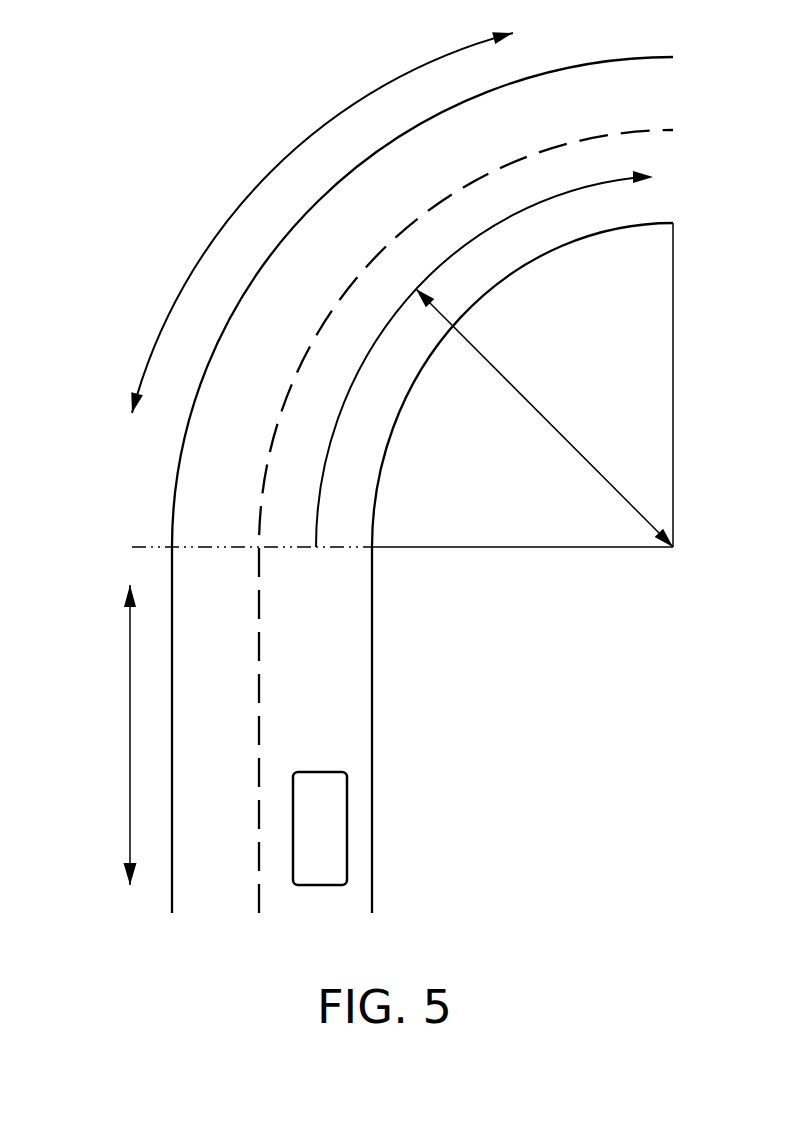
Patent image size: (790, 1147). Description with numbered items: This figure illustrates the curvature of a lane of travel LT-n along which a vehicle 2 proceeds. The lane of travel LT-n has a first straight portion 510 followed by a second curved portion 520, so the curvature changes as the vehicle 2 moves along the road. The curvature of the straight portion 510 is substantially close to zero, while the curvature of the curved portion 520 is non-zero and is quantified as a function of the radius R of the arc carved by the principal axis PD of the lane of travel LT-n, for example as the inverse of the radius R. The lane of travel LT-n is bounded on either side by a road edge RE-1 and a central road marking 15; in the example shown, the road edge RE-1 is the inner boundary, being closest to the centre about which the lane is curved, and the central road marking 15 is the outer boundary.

The second curved portion 520 is at (280, 162).
The first straight portion 510 is at (130, 732).
The principal axis PD is at (614, 180).
The radius R is at (568, 445).
The road edge RE-1 is at (373, 732).
The vehicle 2 is at (347, 827).
The lane of travel LT-n is at (357, 900).
The central road marking 15 is at (260, 903).